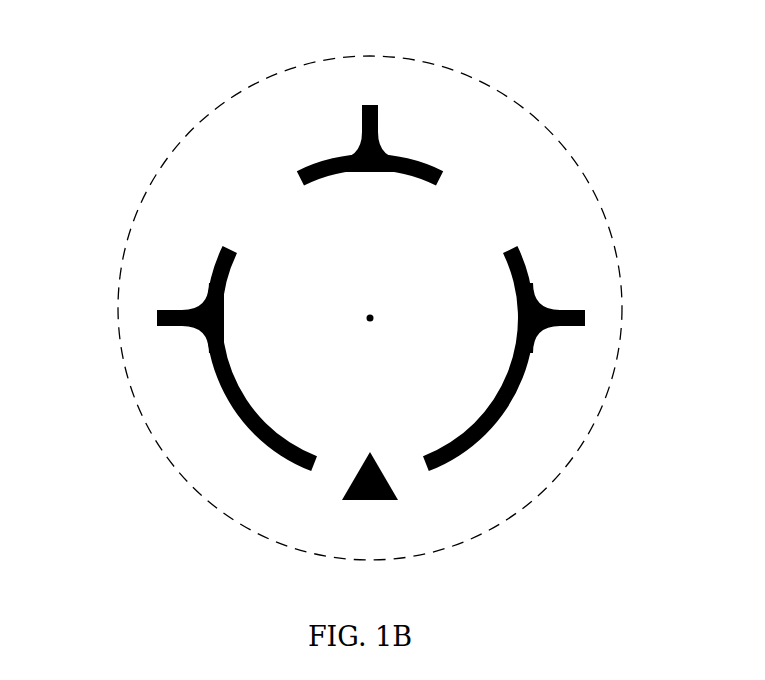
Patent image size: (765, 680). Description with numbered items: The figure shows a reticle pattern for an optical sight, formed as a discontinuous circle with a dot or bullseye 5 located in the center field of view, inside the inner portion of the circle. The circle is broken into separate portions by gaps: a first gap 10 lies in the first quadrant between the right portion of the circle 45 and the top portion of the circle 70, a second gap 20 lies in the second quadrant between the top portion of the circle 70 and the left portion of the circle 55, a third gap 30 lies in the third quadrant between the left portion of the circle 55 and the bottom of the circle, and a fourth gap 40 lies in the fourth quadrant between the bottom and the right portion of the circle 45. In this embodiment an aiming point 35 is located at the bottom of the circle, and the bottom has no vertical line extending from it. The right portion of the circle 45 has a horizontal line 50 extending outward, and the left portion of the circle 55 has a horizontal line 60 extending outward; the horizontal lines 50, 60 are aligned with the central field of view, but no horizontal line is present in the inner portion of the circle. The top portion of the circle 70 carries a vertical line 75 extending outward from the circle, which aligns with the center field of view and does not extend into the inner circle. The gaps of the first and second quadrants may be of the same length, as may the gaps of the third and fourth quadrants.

The dot or bullseye 5 is at (387, 322).
The first gap 10 is at (458, 183).
The second gap 20 is at (293, 180).
The third gap 30 is at (348, 452).
The aiming point 35 is at (356, 503).
The fourth gap 40 is at (388, 462).
The right portion of the circle 45 is at (540, 280).
The horizontal line 50 is at (595, 313).
The left portion of the circle 55 is at (193, 283).
The horizontal line 60 is at (152, 316).
The top portion of the circle 70 is at (404, 146).
The vertical line 75 is at (364, 101).